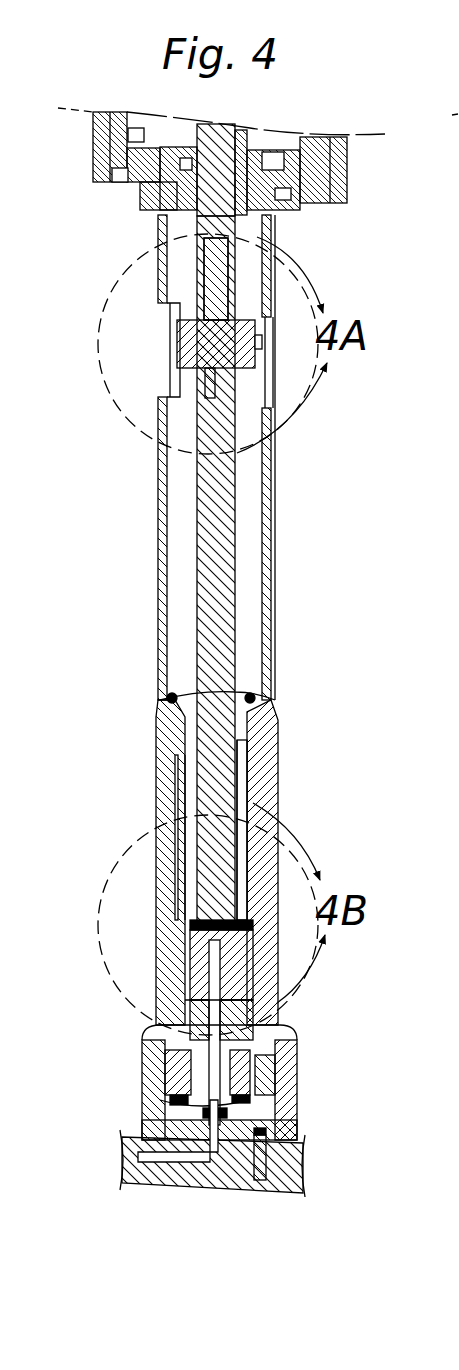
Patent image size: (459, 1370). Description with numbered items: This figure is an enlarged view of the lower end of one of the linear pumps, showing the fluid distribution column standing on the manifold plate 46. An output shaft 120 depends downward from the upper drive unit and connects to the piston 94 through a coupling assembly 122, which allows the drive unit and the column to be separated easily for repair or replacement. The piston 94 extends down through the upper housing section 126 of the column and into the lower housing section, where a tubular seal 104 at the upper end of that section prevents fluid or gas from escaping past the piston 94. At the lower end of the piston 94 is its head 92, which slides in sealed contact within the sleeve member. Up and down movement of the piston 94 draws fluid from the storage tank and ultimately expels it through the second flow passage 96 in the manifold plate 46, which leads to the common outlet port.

The output shaft 120 is at (195, 231).
The coupling assembly 122 is at (170, 351).
The piston 94 is at (207, 507).
The upper housing section 126 is at (268, 603).
The tubular seal 104 is at (162, 702).
The head 92 is at (210, 882).
The manifold plate 46 is at (142, 1138).
The second flow passage 96 is at (168, 1163).